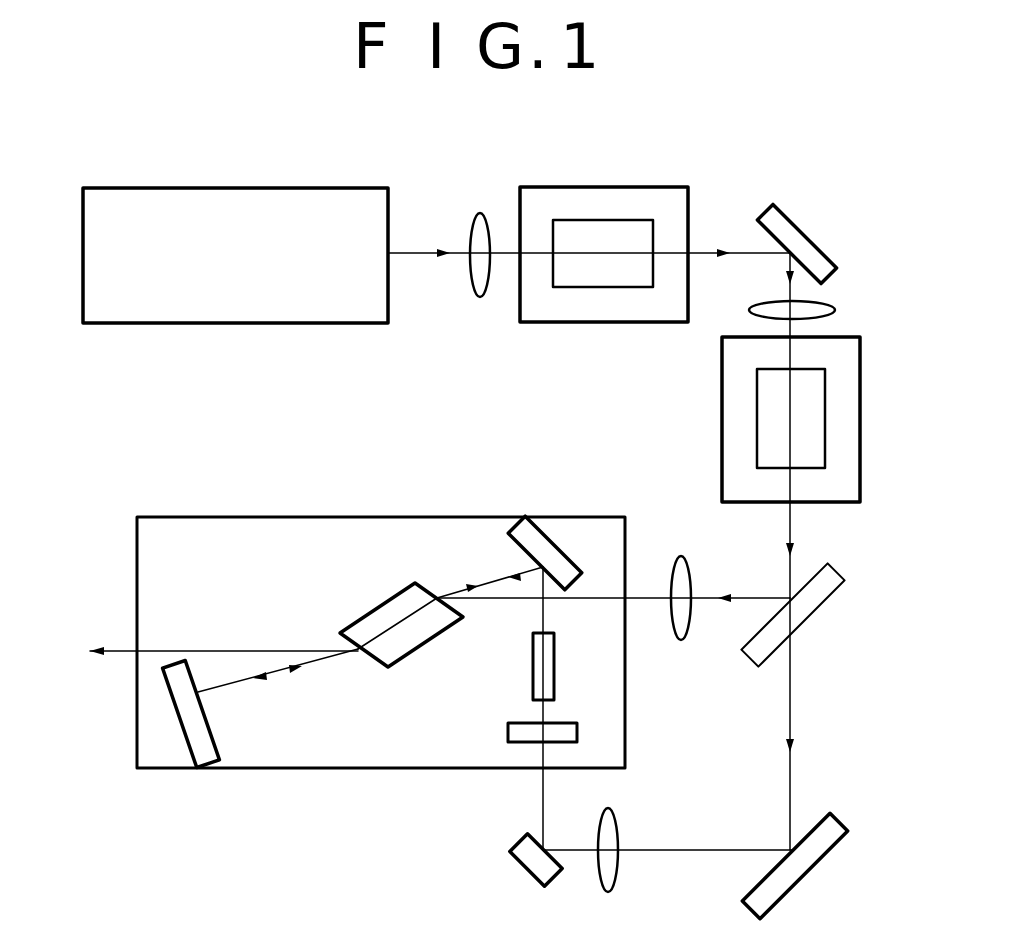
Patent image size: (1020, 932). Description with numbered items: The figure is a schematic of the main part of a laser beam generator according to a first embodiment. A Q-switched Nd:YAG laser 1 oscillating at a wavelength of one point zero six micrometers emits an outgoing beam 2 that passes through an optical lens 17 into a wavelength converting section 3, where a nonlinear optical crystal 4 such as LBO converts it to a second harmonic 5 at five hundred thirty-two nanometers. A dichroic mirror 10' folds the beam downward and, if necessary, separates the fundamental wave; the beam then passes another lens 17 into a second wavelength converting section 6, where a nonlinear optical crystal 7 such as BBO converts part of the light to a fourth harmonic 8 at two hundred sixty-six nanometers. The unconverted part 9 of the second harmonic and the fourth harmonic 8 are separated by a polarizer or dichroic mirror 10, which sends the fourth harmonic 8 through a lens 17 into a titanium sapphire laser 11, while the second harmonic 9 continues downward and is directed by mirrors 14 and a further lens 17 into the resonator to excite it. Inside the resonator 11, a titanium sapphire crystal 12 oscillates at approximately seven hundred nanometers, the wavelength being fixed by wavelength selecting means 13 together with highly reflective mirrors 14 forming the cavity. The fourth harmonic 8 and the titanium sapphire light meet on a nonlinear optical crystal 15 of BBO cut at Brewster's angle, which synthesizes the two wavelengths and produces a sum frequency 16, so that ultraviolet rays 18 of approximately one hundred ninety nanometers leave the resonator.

The Q-switched Nd:YAG laser 1 is at (231, 205).
The outgoing beam 2 is at (415, 255).
The wavelength converting section 3 is at (583, 311).
The nonlinear optical crystal 4 is at (603, 230).
The second harmonic 5 is at (707, 253).
The wavelength converting section 6 is at (852, 447).
The nonlinear optical crystal 7 is at (815, 392).
The fourth harmonic 8 is at (793, 523).
The unconverted second harmonic part 9 is at (793, 698).
The dichroic mirror 10 is at (804, 614).
The dichroic mirror 10' is at (817, 236).
The titanium sapphire laser 11 is at (235, 537).
The titanium sapphire crystal 12 is at (548, 657).
The wavelength selecting means 13 is at (548, 550).
The mirror 14 is at (515, 694).
The nonlinear optical crystal 15 is at (388, 617).
The sum frequency 16 is at (245, 648).
The optical lens 17 is at (482, 224).
The ultraviolet rays 18 is at (75, 655).